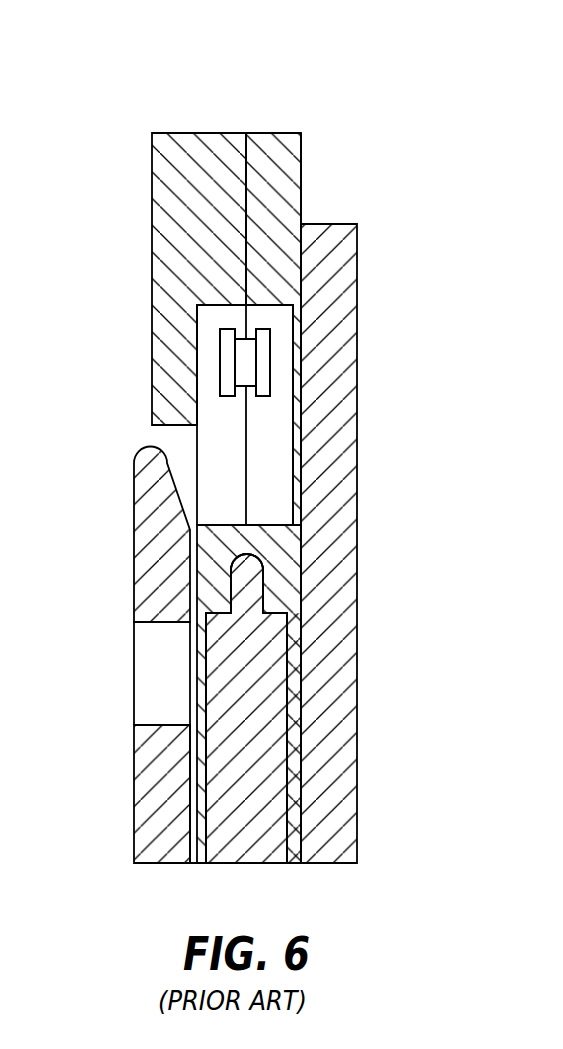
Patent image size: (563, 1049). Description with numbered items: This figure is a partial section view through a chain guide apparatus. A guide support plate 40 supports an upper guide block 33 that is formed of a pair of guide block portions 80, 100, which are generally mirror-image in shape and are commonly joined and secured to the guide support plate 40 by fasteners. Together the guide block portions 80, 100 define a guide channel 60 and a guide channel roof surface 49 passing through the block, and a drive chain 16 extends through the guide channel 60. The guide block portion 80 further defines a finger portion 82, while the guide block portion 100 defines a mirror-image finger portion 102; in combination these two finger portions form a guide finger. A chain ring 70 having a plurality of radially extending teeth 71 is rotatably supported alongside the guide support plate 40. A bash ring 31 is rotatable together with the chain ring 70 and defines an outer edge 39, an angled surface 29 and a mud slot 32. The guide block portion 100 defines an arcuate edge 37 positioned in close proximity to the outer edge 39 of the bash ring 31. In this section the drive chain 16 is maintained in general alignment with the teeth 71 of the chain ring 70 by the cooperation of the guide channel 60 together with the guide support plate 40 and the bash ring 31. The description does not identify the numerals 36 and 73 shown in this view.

The drive chain 16 is at (260, 362).
The angled surface 29 is at (197, 495).
The bash ring 31 is at (137, 827).
The mud slot 32 is at (160, 623).
The upper guide block 33 is at (301, 160).
The top face 36 is at (213, 133).
The arcuate edge 37 is at (188, 427).
The outer edge 39 is at (142, 453).
The guide support plate 40 is at (421, 318).
The guide channel roof surface 49 is at (223, 305).
The guide channel 60 is at (274, 321).
The chain ring 70 is at (243, 735).
The teeth 71 is at (263, 562).
The outer housing 73 is at (20, 24).
The guide block portion 80 is at (275, 133).
The finger portion 82 is at (290, 546).
The guide block portion 100 is at (180, 133).
The finger portion 102 is at (212, 564).